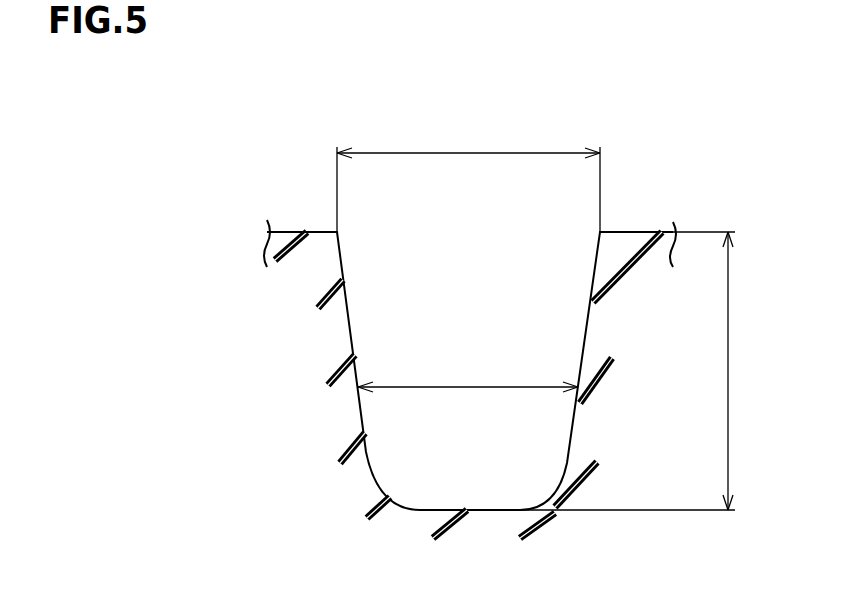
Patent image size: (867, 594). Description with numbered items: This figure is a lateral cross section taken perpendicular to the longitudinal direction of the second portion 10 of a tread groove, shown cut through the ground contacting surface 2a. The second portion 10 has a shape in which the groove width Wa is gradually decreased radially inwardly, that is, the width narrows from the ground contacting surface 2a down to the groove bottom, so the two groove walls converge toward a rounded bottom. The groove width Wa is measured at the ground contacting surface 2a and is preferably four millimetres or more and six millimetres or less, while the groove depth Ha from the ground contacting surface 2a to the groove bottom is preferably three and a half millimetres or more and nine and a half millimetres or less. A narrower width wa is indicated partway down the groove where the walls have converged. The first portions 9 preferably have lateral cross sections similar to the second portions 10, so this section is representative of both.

The ground contacting surface 2a is at (287, 230).
The first portion 9 is at (486, 353).
The second portion 10 is at (502, 288).
The groove width Wa is at (468, 175).
The groove intermediate width wa is at (468, 387).
The groove depth Ha is at (647, 371).